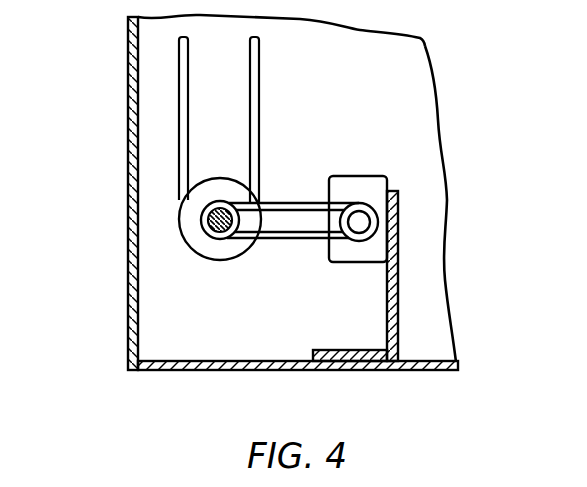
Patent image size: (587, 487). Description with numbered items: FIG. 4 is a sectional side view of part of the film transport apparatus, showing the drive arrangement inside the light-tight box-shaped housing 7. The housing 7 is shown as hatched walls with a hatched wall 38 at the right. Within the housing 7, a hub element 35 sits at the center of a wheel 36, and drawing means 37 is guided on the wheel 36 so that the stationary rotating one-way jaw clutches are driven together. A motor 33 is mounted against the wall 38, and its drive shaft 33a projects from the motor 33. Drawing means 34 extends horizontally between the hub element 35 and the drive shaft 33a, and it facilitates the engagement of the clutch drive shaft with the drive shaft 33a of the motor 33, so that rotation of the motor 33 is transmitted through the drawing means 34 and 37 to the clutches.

The housing 7 is at (127, 58).
The motor 33 is at (368, 183).
The drive shaft of motor 33a is at (362, 221).
The drawing means 34 is at (297, 233).
The shaft 35 is at (222, 232).
The wheel 36 is at (193, 232).
The drawing means 37 is at (181, 147).
The wall 38 is at (400, 313).